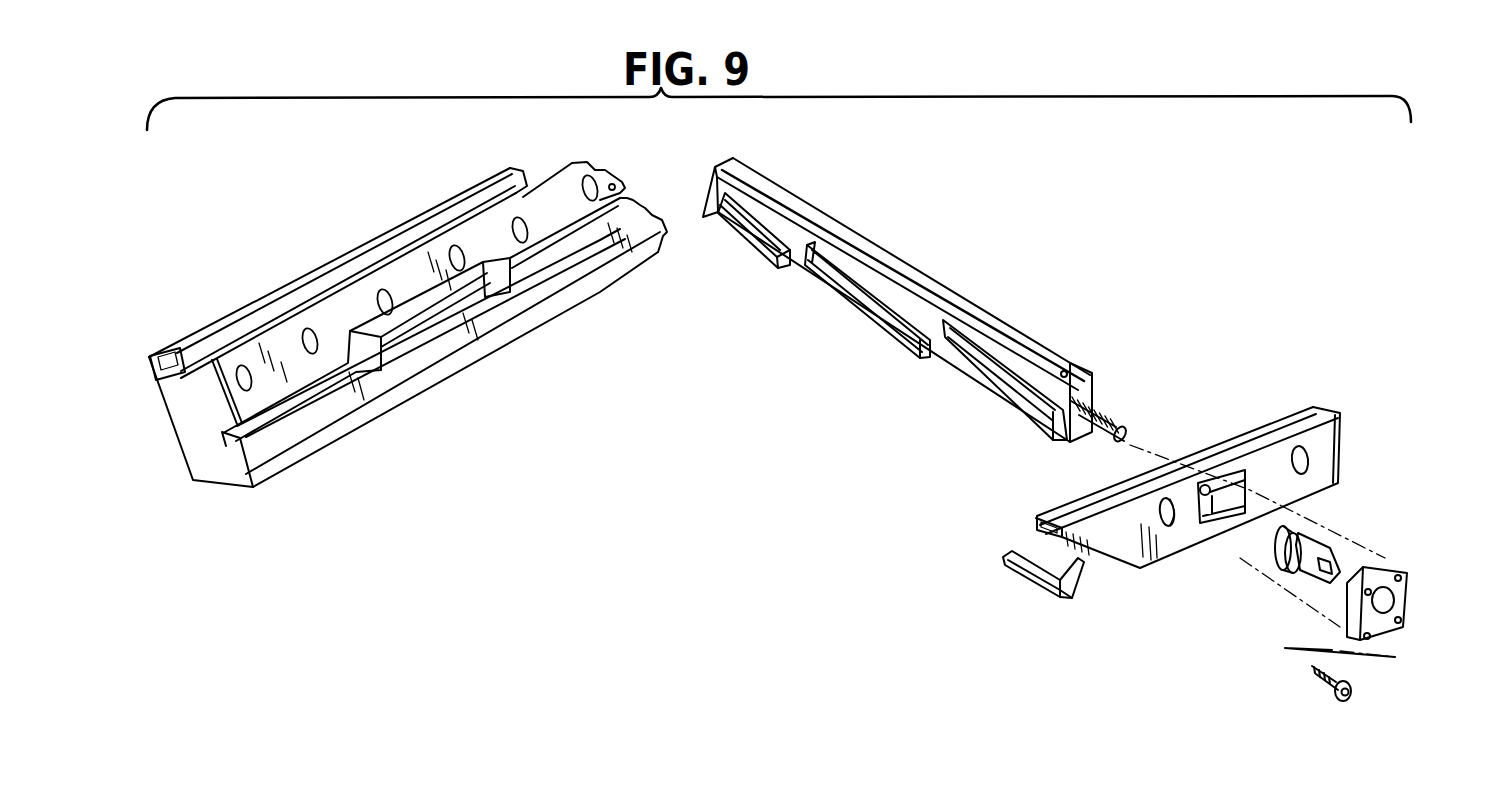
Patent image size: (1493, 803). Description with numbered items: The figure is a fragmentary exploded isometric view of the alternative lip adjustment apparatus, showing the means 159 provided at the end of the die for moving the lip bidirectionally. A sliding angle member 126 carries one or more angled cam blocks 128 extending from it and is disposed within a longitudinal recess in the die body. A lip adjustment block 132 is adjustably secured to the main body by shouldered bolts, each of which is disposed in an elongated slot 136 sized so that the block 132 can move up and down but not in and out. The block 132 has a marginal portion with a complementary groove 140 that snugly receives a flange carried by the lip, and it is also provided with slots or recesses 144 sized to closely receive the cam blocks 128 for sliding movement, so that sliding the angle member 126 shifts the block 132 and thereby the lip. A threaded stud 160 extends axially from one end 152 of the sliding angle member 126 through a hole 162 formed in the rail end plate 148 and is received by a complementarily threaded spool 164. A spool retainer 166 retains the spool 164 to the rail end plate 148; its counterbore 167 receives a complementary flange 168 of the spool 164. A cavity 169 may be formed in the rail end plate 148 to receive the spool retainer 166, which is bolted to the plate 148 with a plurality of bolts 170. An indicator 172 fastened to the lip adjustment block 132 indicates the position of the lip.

The sliding angle member 126 is at (923, 305).
The angled cam blocks 128 is at (978, 356).
The lip adjustment block 132 is at (225, 470).
The elongated slot 136 is at (455, 271).
The groove or recess 140 is at (170, 373).
The slots or recesses 144 is at (513, 284).
The rail end plate 148 is at (1318, 450).
The end of the sliding angle member 152 is at (1083, 388).
The means for moving the lip bidirectionally 159 is at (1234, 618).
The threaded stud 160 is at (1110, 418).
The hole 162 is at (1205, 487).
The threaded spool 164 is at (1305, 530).
The spool retainer 166 is at (1355, 620).
The counterbore 167 is at (1397, 602).
The flange 168 is at (1262, 557).
The cavity 169 is at (1212, 518).
The bolts 170 is at (1330, 690).
The indicator 172 is at (1065, 592).